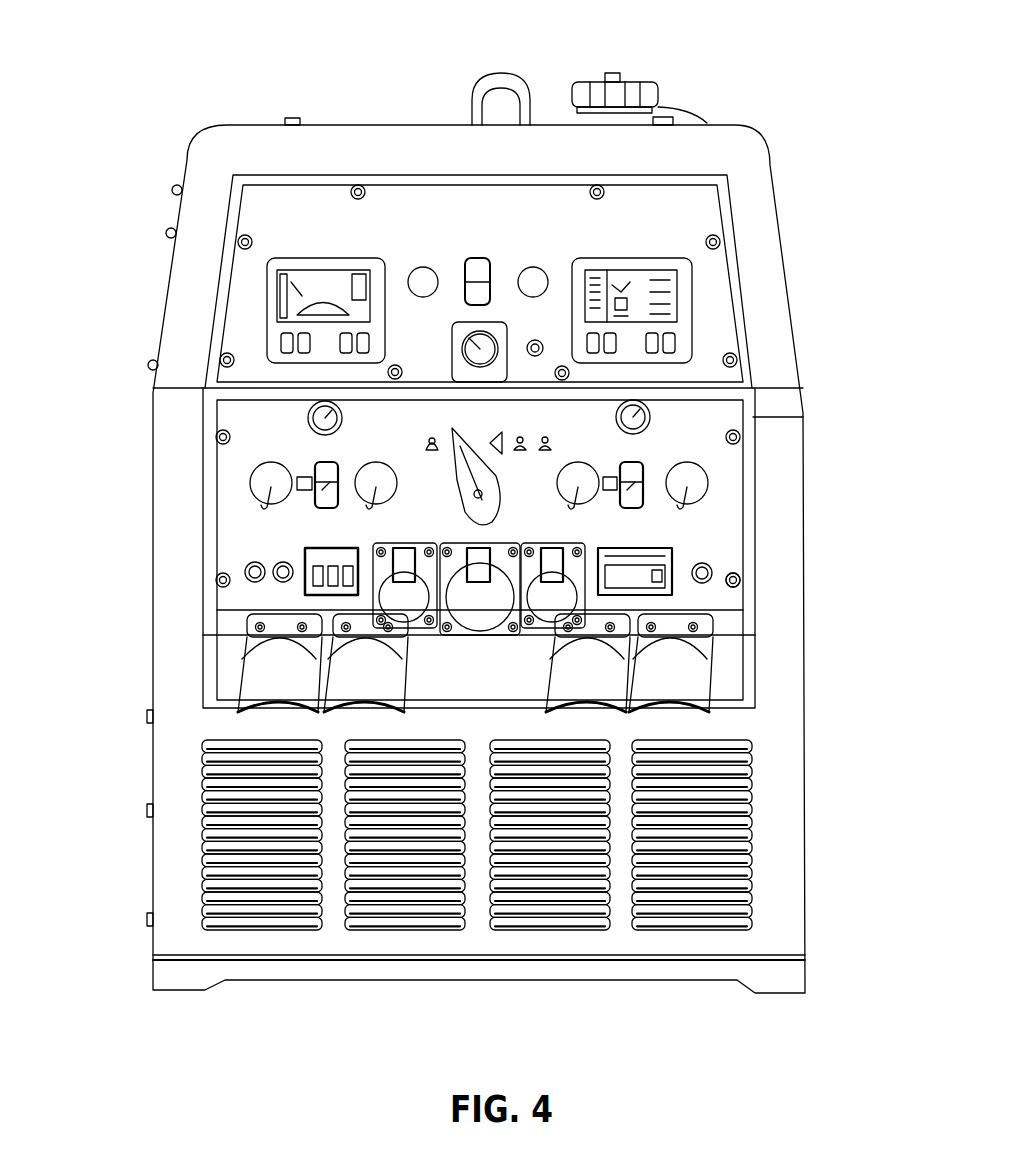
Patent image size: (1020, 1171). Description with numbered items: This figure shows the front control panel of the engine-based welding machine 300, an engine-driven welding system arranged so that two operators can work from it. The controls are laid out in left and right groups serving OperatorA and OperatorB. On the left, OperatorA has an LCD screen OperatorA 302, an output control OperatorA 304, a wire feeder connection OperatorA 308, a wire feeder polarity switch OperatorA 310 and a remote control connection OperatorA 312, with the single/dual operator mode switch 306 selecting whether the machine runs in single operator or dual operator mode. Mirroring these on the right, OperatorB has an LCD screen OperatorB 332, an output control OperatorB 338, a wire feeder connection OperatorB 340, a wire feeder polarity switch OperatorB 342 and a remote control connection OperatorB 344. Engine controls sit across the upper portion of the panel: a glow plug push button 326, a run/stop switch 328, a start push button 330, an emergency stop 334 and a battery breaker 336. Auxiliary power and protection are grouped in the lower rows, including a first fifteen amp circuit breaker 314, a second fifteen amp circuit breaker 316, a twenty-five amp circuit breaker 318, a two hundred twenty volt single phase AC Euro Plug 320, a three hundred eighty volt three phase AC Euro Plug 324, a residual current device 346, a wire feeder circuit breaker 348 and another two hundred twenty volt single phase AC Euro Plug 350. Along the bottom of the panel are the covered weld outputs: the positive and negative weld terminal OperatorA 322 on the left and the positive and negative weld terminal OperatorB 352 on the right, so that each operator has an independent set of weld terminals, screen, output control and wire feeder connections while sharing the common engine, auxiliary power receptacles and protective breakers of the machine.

The engine-based welding machine 300 is at (206, 103).
The LCD screen OperatorA 302 is at (268, 281).
The output control OperatorA 304 is at (310, 412).
The single/dual operator mode switch 306 is at (360, 470).
The wire feeder connection OperatorA 308 is at (251, 482).
The wire feeder polarity switch OperatorA 310 is at (315, 497).
The remote control connection OperatorA 312 is at (382, 506).
The 15 amp circuit breaker 314 is at (245, 570).
The 15 amp circuit breaker 316 is at (275, 582).
The 25 amp circuit breaker 318 is at (306, 550).
The 220V single phase AC Euro Plug 320 is at (394, 602).
The positive and negative weld terminal OperatorA 322 is at (363, 713).
The 380V three phase AC Euro Plug 324 is at (485, 614).
The glow plug push button 326 is at (423, 267).
The run/stop switch 328 is at (473, 257).
The start push button 330 is at (531, 267).
The LCD screen OperatorB 332 is at (655, 292).
The emergency stop 334 is at (500, 341).
The battery breaker 336 is at (541, 352).
The output control OperatorB 338 is at (648, 420).
The wire feeder connection OperatorB 340 is at (707, 479).
The wire feeder polarity switch OperatorB 342 is at (642, 505).
The remote control connection OperatorB 344 is at (598, 490).
The residual current device 346 is at (673, 560).
The wire feeder circuit breaker 348 is at (713, 575).
The 220V single phase AC Euro Plug 350 is at (740, 586).
The positive and negative weld terminal OperatorB 352 is at (598, 708).